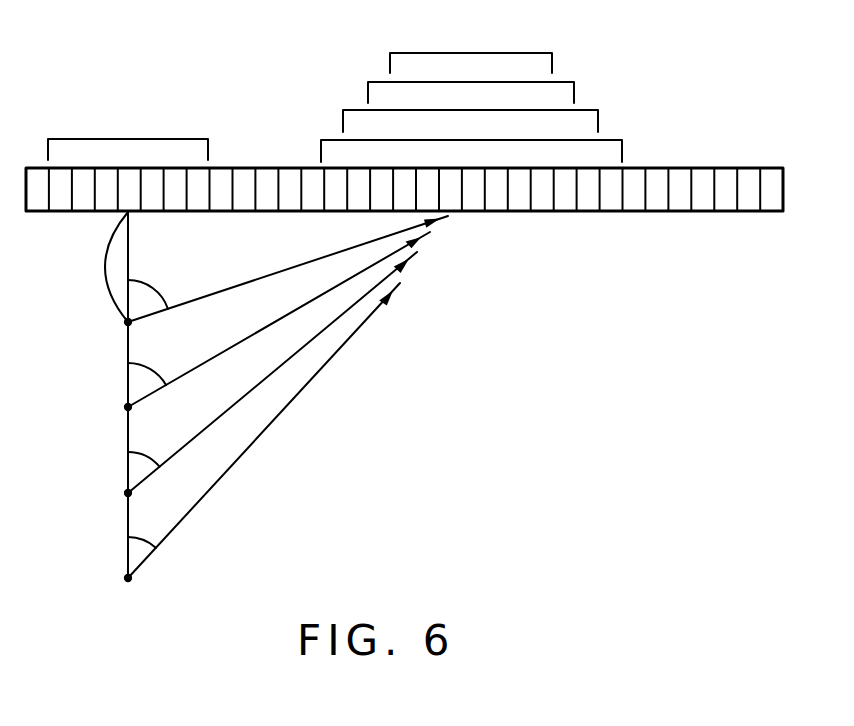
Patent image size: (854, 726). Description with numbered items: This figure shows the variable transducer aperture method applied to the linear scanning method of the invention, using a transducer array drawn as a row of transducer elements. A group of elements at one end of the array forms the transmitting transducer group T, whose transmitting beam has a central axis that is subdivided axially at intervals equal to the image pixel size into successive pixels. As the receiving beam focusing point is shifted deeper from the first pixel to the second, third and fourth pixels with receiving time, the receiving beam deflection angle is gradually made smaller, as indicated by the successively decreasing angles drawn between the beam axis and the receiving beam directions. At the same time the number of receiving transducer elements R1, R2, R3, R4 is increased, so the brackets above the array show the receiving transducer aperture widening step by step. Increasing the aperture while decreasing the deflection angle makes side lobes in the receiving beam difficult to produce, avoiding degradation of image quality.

The transmitting transducer group T is at (128, 133).
The receiving transducer elements R1 is at (471, 47).
The receiving transducer elements R2 is at (471, 79).
The receiving transducer elements R3 is at (470, 108).
The receiving transducer elements R4 is at (471, 137).